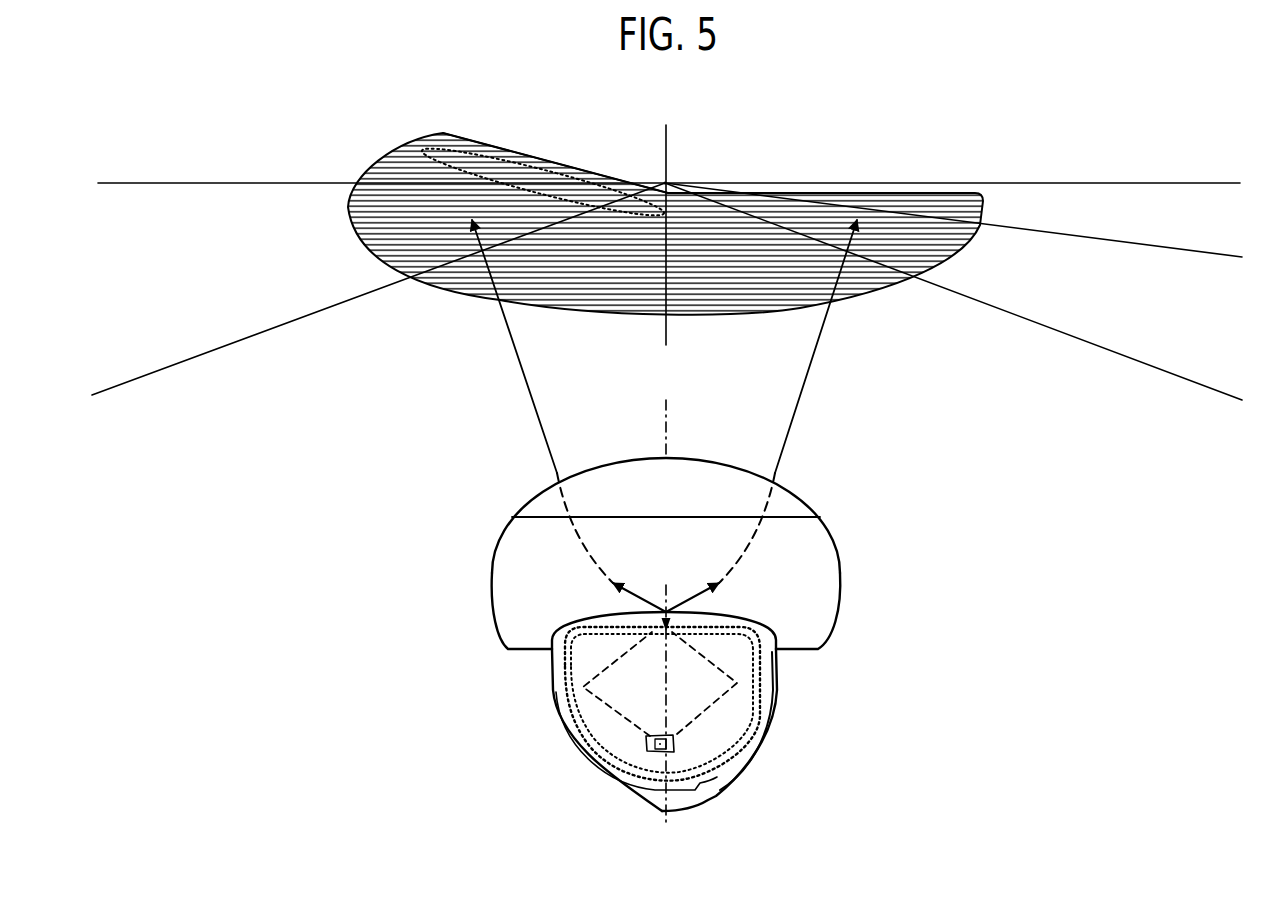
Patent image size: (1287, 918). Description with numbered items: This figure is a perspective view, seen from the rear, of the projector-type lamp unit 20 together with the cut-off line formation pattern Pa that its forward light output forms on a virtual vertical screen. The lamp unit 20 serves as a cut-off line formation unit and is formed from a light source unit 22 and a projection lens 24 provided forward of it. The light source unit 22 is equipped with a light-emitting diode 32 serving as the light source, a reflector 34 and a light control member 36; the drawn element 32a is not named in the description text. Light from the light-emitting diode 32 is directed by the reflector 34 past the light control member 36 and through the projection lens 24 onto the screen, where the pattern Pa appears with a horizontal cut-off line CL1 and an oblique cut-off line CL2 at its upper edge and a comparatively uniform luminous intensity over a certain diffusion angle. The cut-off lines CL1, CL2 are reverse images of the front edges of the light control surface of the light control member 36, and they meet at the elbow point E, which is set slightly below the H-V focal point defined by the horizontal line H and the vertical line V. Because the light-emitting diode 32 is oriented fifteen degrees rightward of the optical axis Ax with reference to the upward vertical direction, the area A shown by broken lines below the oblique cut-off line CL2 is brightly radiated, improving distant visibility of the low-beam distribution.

The lamp unit 20 is at (728, 621).
The light source unit 22 is at (655, 692).
The projection lens 24 is at (495, 498).
The light-emitting diode 32 is at (696, 735).
The light emitting chip 32a is at (683, 746).
The reflector 34 is at (779, 685).
The light control member 36 is at (745, 655).
The cut-off line formation pattern Pa is at (928, 192).
The area A is at (427, 156).
The optical axis Ax is at (660, 425).
The horizontal cut-off line CL1 is at (773, 194).
The oblique cut-off line CL2 is at (525, 153).
The elbow point E is at (673, 182).
The horizontal line H is at (668, 187).
The vertical line V is at (666, 241).